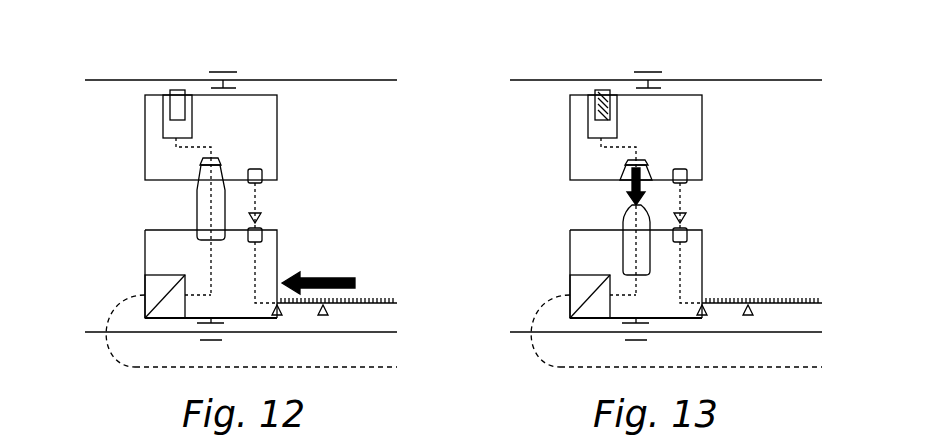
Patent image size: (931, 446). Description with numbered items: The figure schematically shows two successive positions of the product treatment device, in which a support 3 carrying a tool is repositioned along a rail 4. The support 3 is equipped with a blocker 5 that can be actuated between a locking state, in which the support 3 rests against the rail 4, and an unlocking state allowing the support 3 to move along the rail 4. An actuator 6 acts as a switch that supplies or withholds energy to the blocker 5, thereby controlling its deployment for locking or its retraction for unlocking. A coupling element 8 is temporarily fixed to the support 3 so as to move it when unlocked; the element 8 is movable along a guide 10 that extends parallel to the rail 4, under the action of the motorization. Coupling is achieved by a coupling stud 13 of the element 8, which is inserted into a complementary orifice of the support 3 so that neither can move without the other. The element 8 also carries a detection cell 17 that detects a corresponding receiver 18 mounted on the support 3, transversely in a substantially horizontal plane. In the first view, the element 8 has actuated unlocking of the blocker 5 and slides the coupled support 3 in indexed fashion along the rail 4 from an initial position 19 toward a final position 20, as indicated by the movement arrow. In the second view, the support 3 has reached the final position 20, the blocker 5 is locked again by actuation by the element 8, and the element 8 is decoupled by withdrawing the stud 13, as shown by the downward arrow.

In FIG. 12, the support 3 is at (140, 137).
In FIG. 13, the support 3 is at (573, 102).
In FIG. 12, the rail 4 is at (269, 80).
In FIG. 13, the rail 4 is at (666, 44).
In FIG. 12, the blocker 5 is at (178, 90).
In FIG. 13, the blocker 5 is at (568, 76).
In FIG. 12, the actuator 6 is at (154, 283).
In FIG. 13, the actuator 6 is at (554, 257).
In FIG. 12, the element 8 is at (285, 255).
In FIG. 13, the element 8 is at (713, 196).
In FIG. 12, the guide 10 is at (137, 332).
In FIG. 13, the guide 10 is at (643, 363).
In FIG. 12, the coupling stud 13 is at (197, 205).
In FIG. 13, the coupling stud 13 is at (623, 212).
In FIG. 12, the detection cell 17 is at (262, 235).
In FIG. 13, the detection cell 17 is at (744, 175).
In FIG. 12, the receiver 18 is at (262, 176).
In FIG. 13, the receiver 18 is at (725, 119).
In FIG. 12, the initial position 19 is at (323, 320).
In FIG. 13, the initial position 19 is at (799, 372).
In FIG. 12, the final position 20 is at (277, 320).
In FIG. 13, the final position 20 is at (759, 369).